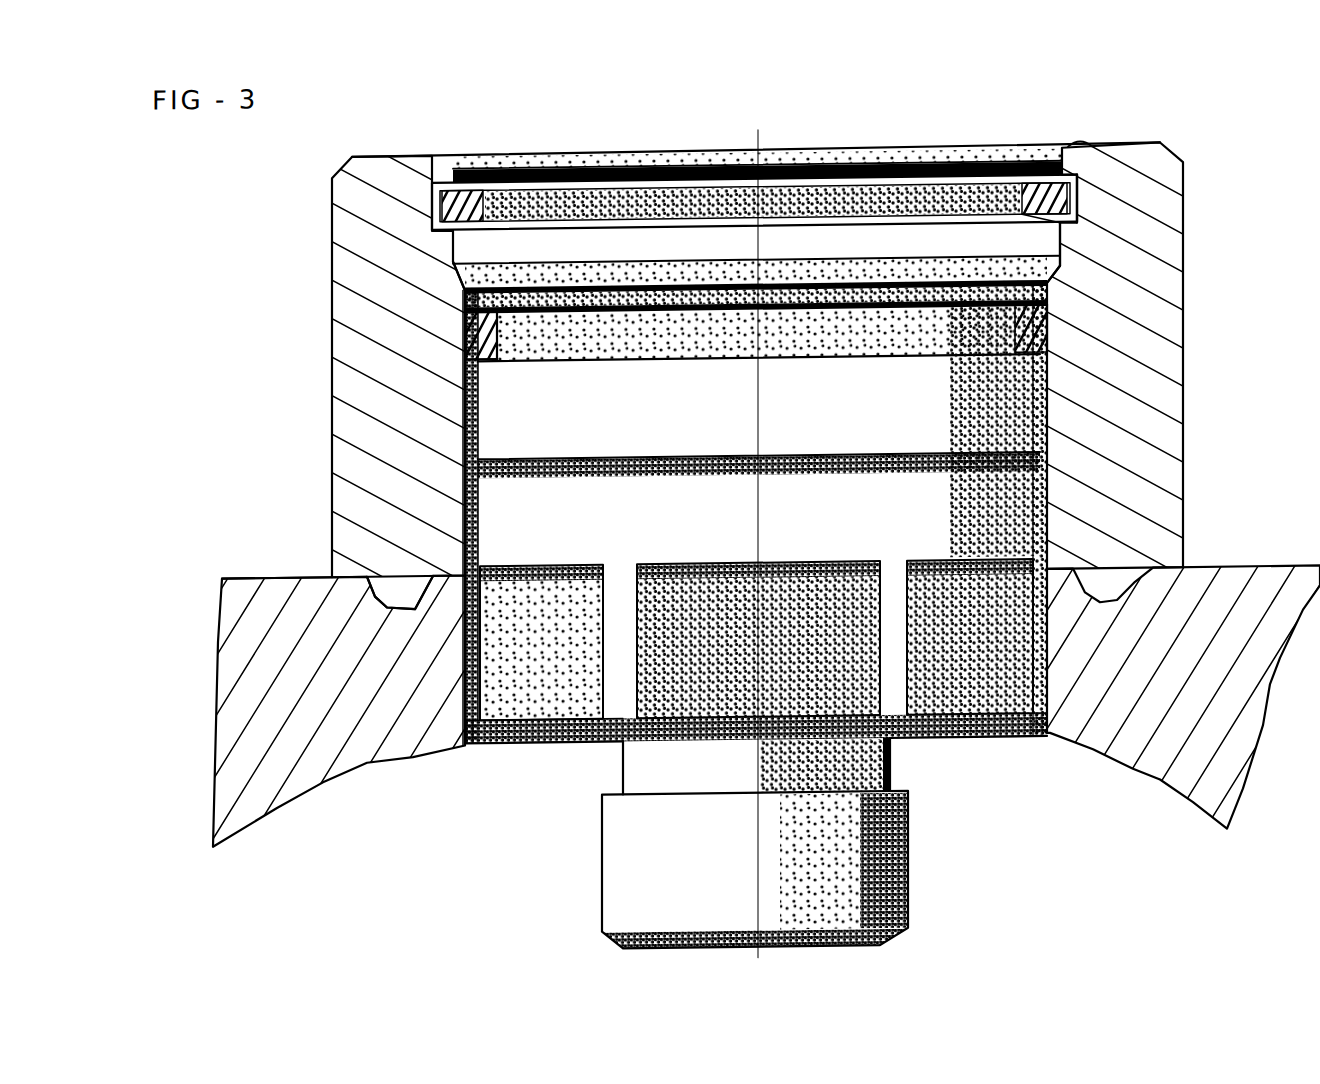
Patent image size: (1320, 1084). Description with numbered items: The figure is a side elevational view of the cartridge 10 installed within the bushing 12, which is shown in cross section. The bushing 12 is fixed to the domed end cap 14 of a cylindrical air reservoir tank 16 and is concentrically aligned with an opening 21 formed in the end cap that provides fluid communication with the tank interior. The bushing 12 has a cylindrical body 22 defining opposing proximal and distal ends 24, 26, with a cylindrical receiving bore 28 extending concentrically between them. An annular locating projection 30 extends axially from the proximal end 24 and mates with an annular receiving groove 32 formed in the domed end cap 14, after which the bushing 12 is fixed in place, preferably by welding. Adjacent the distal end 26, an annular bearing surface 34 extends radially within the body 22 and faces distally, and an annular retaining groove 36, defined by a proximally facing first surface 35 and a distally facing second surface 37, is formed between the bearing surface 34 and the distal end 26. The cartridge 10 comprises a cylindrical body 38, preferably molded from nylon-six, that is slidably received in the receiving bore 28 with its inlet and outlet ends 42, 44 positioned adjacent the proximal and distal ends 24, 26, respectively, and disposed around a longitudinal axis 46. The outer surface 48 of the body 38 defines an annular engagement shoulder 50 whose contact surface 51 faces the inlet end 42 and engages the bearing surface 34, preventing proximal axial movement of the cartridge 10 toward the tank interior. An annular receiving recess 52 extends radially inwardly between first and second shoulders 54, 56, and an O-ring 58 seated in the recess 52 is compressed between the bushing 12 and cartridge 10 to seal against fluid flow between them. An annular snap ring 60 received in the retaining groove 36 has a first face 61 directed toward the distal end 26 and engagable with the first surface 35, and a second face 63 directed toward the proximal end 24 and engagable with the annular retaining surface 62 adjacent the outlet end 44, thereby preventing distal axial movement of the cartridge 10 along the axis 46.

The cartridge 10 is at (903, 745).
The bushing 12 is at (332, 433).
The domed end cap 14 is at (228, 745).
The air reservoir tank 16 is at (1227, 595).
The opening 21 is at (1047, 745).
The cylindrical body 22 is at (1150, 473).
The proximal end 24 is at (332, 577).
The distal end 26 is at (378, 157).
The receiving bore 28 is at (477, 747).
The annular locating projection 30 is at (363, 540).
The annular receiving groove 32 is at (399, 614).
The annular bearing surface 34 is at (1057, 283).
The first surface 35 is at (1095, 158).
The annular retaining groove 36 is at (1080, 202).
The second surface 37 is at (1080, 241).
The cylindrical body 38 is at (910, 865).
The inlet end 42 is at (893, 950).
The outlet end 44 is at (520, 231).
The longitudinal axis 46 is at (757, 528).
The outer surface 48 is at (578, 440).
The annular engagement shoulder 50 is at (483, 277).
The contact surface 51 is at (1047, 343).
The annular receiving recess 52 is at (490, 362).
The first shoulder 54 is at (498, 328).
The second shoulder 56 is at (463, 362).
The O-ring 58 is at (1057, 355).
The annular snap ring 60 is at (1033, 195).
The first face 61 is at (1003, 192).
The annular retaining surface 62 is at (567, 231).
The second face 63 is at (1040, 232).